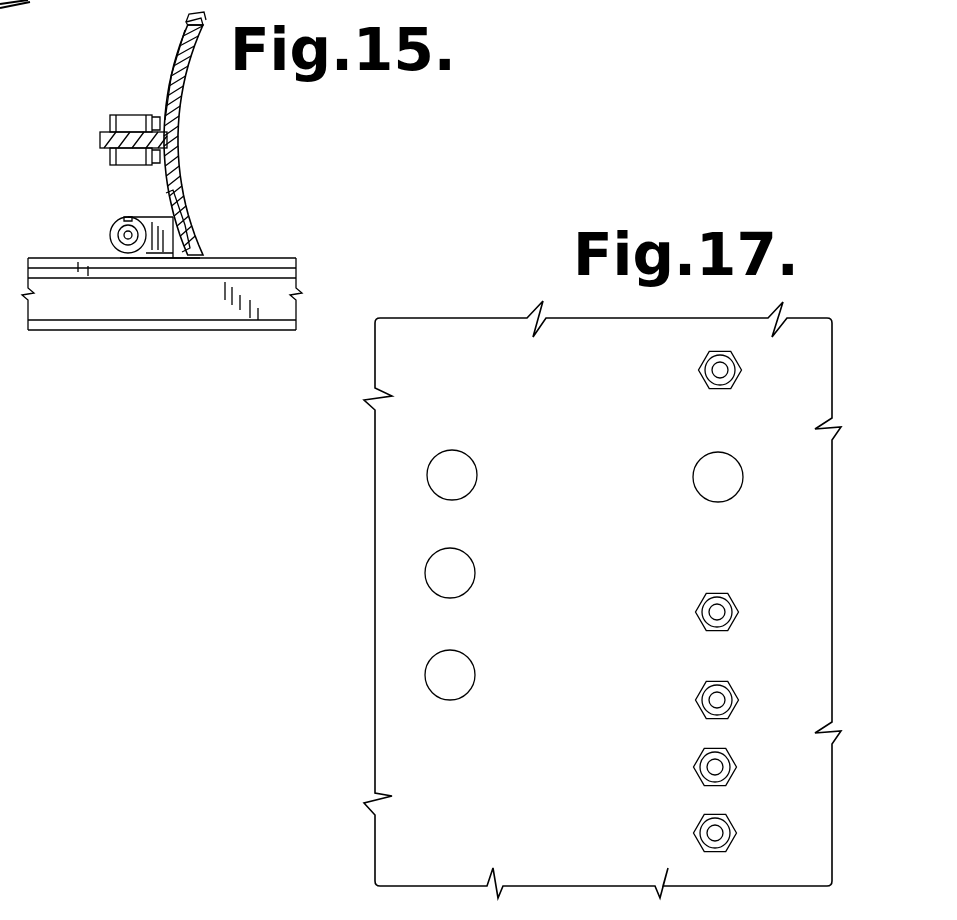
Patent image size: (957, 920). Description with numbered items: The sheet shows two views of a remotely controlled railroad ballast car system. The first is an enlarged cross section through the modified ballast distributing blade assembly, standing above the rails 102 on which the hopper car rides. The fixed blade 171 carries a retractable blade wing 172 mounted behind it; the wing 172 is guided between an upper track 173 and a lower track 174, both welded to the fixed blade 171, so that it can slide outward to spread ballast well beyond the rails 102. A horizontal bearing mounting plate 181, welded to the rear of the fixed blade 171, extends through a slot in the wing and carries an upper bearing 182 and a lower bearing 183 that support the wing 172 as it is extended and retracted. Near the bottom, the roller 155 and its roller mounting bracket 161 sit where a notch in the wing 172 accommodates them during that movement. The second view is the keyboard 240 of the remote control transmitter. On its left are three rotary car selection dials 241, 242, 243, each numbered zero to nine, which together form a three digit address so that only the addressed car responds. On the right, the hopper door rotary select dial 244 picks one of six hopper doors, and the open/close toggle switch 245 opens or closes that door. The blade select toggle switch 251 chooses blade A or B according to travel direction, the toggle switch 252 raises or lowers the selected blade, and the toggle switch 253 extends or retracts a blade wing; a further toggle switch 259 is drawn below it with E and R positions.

In FIG. 15, the rails 102 is at (135, 310).
In FIG. 15, the roller 155 is at (125, 238).
In FIG. 15, the roller mounting bracket 161 is at (143, 216).
In FIG. 15, the fixed blade 171 is at (181, 106).
In FIG. 15, the retractable blade wing 172 is at (165, 83).
In FIG. 15, the upper track 173 is at (193, 33).
In FIG. 15, the lower track 174 is at (175, 205).
In FIG. 15, the horizontal bearing mounting plate 181 is at (100, 136).
In FIG. 15, the upper bearing 182 is at (126, 115).
In FIG. 15, the lower bearing 183 is at (110, 156).
In FIG. 17, the keyboard 240 is at (487, 287).
In FIG. 17, the rotary car selection dial 241 is at (474, 469).
In FIG. 17, the rotary car selection dial 242 is at (472, 566).
In FIG. 17, the rotary car selection dial 243 is at (466, 671).
In FIG. 17, the hopper door rotary select dial 244 is at (696, 477).
In FIG. 17, the open/close toggle switch 245 is at (699, 368).
In FIG. 17, the blade select toggle switch 251 is at (700, 600).
In FIG. 17, the raise/lower toggle switch 252 is at (700, 714).
In FIG. 17, the blade extension/retraction toggle switch 253 is at (700, 778).
In FIG. 17, the E/R/R toggle switch 259 is at (696, 844).